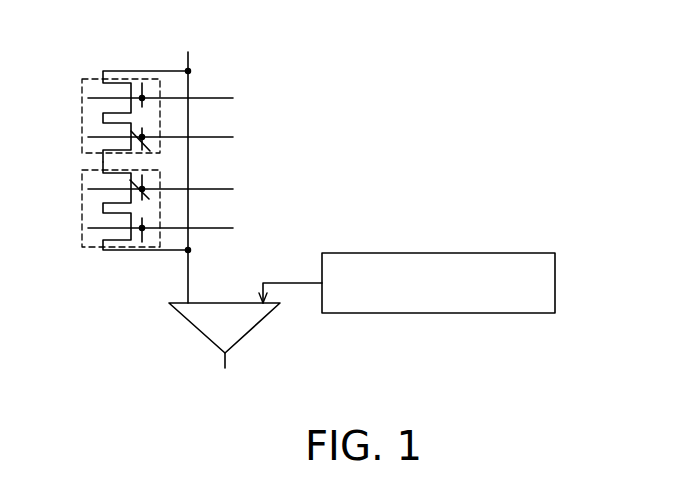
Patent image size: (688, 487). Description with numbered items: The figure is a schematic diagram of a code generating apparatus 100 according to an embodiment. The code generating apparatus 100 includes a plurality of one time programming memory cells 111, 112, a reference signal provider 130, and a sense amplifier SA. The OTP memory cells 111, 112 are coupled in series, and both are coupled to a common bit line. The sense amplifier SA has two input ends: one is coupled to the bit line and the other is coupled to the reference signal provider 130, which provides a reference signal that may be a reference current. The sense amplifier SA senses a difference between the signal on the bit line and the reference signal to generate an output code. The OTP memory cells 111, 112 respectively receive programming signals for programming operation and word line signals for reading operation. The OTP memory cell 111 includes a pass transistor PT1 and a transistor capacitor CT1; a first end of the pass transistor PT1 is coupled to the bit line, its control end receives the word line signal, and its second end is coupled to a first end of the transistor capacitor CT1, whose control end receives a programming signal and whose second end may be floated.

The code generating apparatus 100 is at (351, 211).
The one time programming memory cell 111 is at (155, 91).
The one time programming memory cell 112 is at (88, 250).
The reference signal provider 130 is at (446, 253).
The pass transistor PT1 is at (130, 83).
The transistor capacitor CT1 is at (133, 118).
The sense amplifier SA is at (188, 321).